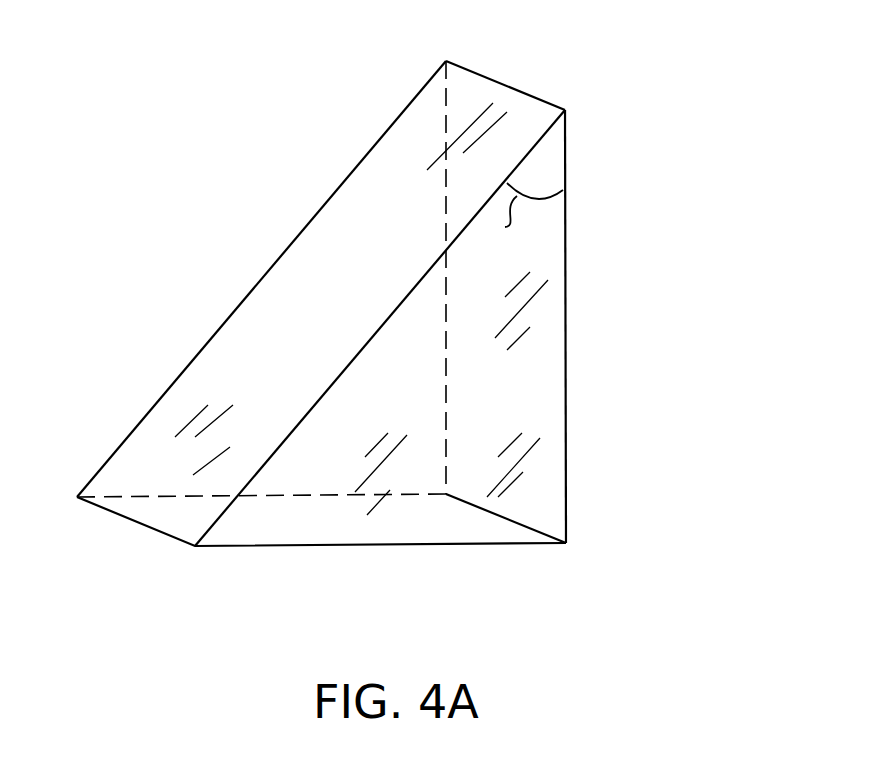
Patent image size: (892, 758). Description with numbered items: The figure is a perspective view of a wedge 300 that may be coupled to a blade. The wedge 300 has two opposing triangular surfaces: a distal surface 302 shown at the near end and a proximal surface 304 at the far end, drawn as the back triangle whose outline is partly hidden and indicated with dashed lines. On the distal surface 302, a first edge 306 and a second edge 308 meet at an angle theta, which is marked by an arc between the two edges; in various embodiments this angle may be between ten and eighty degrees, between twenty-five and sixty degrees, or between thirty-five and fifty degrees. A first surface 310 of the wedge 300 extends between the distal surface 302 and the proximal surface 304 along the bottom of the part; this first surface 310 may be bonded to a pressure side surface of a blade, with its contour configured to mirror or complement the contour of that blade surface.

The wedge 300 is at (670, 121).
The distal surface 302 is at (548, 382).
The proximal surface 304 is at (178, 378).
The first edge 306 is at (528, 156).
The second edge 308 is at (567, 225).
The first surface 310 is at (158, 496).